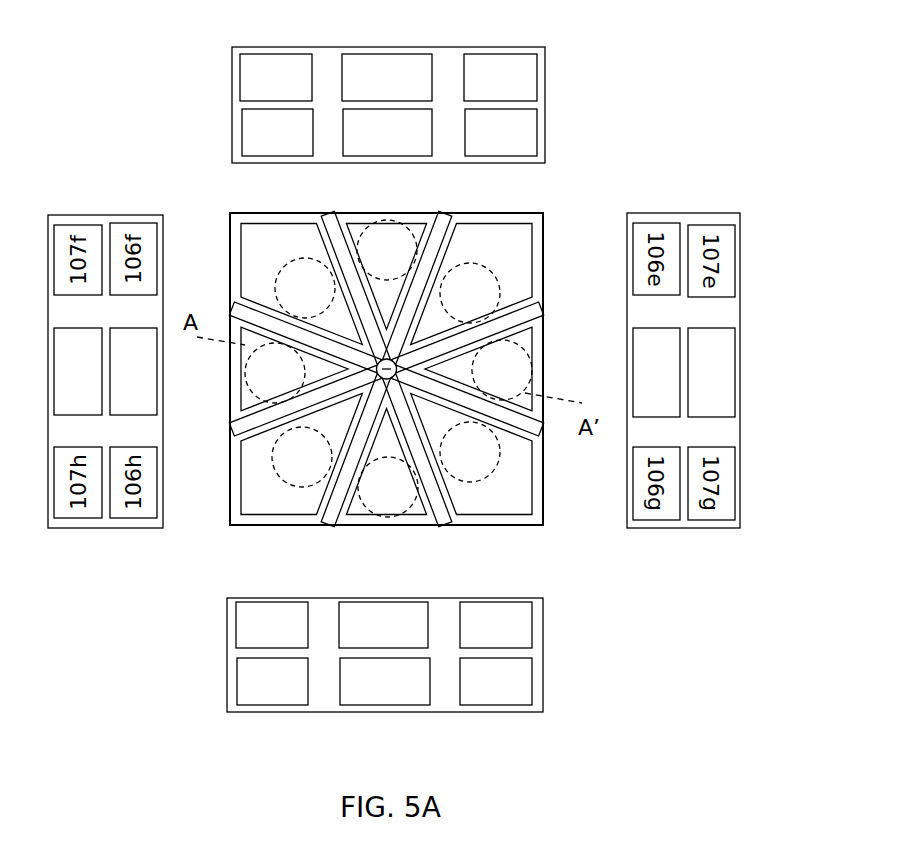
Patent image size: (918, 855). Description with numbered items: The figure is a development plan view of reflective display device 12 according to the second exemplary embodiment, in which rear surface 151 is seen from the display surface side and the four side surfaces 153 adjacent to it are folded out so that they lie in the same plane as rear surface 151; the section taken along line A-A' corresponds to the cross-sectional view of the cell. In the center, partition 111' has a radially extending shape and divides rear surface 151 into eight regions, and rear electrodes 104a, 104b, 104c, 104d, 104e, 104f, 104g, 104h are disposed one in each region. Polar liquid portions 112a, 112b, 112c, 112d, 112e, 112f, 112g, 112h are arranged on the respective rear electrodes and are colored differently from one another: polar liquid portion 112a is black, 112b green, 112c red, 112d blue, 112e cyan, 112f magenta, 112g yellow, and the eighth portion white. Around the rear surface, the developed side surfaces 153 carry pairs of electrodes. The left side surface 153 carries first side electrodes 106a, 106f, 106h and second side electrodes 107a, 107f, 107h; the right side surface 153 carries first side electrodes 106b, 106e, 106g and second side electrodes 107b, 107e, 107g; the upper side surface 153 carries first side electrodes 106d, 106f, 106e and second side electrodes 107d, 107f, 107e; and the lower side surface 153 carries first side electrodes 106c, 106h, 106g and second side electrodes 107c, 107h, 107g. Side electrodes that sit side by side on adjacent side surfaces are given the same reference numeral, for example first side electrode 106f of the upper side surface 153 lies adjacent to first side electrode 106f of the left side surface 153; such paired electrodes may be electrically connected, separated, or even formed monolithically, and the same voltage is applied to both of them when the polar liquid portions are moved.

The reflective display device 12 is at (636, 115).
The rear surface 151 is at (228, 220).
The side surfaces 153 is at (685, 213).
The partition 111' is at (499, 295).
The rear electrode 104a is at (275, 373).
The rear electrode 104b is at (502, 370).
The rear electrode 104c is at (388, 487).
The rear electrode 104d is at (387, 250).
The rear electrode 104e is at (481, 280).
The rear electrode 104f is at (292, 275).
The rear electrode 104g is at (484, 467).
The rear electrode 104h is at (289, 469).
The polar liquid portion 112a is at (245, 392).
The polar liquid portion 112b is at (505, 404).
The polar liquid portion 112c is at (388, 522).
The polar liquid portion 112d is at (380, 213).
The polar liquid portion 112e is at (455, 262).
The polar liquid portion 112f is at (316, 262).
The polar liquid portion 112g is at (461, 493).
The polar liquid portion 112h is at (317, 493).
The first side electrode 106a is at (133, 371).
The first side electrode 106b is at (656, 372).
The first side electrode 106c is at (383, 625).
The first side electrode 106d is at (387, 132).
The first side electrode 106e is at (501, 132).
The first side electrode 106f is at (277, 132).
The first side electrode 106g is at (496, 625).
The first side electrode 106h is at (272, 625).
The second side electrode 107a is at (78, 371).
The second side electrode 107b is at (711, 372).
The second side electrode 107c is at (385, 681).
The second side electrode 107d is at (387, 77).
The second side electrode 107e is at (500, 77).
The second side electrode 107f is at (276, 77).
The second side electrode 107g is at (496, 681).
The second side electrode 107h is at (272, 681).